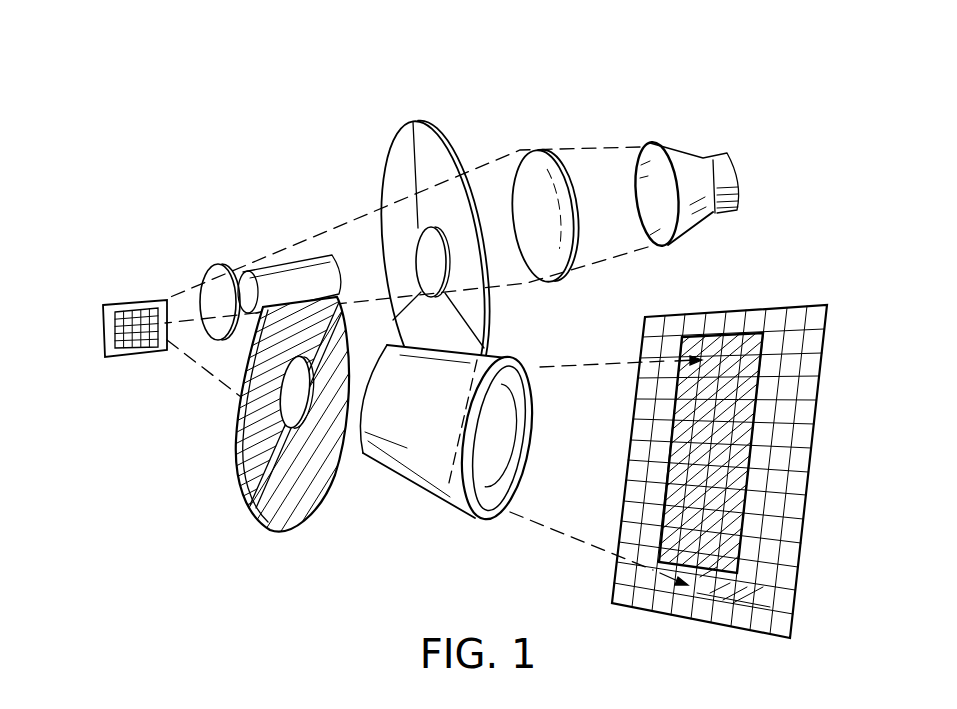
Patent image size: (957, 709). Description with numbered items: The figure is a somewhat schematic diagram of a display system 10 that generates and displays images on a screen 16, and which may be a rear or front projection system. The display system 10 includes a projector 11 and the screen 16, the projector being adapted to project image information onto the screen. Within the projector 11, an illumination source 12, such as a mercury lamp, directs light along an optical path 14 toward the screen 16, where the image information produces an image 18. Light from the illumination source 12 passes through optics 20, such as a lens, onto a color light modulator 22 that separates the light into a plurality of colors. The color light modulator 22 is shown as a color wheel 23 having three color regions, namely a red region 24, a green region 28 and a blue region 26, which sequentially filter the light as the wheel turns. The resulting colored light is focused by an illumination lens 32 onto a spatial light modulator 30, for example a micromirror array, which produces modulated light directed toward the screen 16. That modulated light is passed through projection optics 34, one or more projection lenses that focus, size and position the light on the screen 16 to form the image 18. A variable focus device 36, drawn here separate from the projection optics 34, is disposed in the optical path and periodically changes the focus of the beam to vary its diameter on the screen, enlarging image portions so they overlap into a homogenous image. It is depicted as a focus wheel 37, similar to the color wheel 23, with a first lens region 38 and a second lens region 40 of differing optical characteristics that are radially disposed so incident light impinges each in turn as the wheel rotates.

The display system 10 is at (652, 60).
The projector 11 is at (232, 175).
The illumination source 12 is at (695, 148).
The optical path 14 is at (582, 145).
The screen 16 is at (748, 293).
The image 18 is at (757, 427).
The optics 20 is at (527, 150).
The color light modulator 22 is at (405, 105).
The color wheel 23 is at (428, 120).
The red region 24 is at (380, 193).
The blue region 26 is at (454, 327).
The green region 28 is at (447, 173).
The spatial light modulator 30 is at (126, 290).
The illumination lens 32 is at (205, 255).
The projection optics 34 is at (420, 502).
The variable focus device 36 is at (222, 466).
The focus wheel 37 is at (238, 451).
The first lens region 38 is at (249, 421).
The second lens region 40 is at (300, 492).